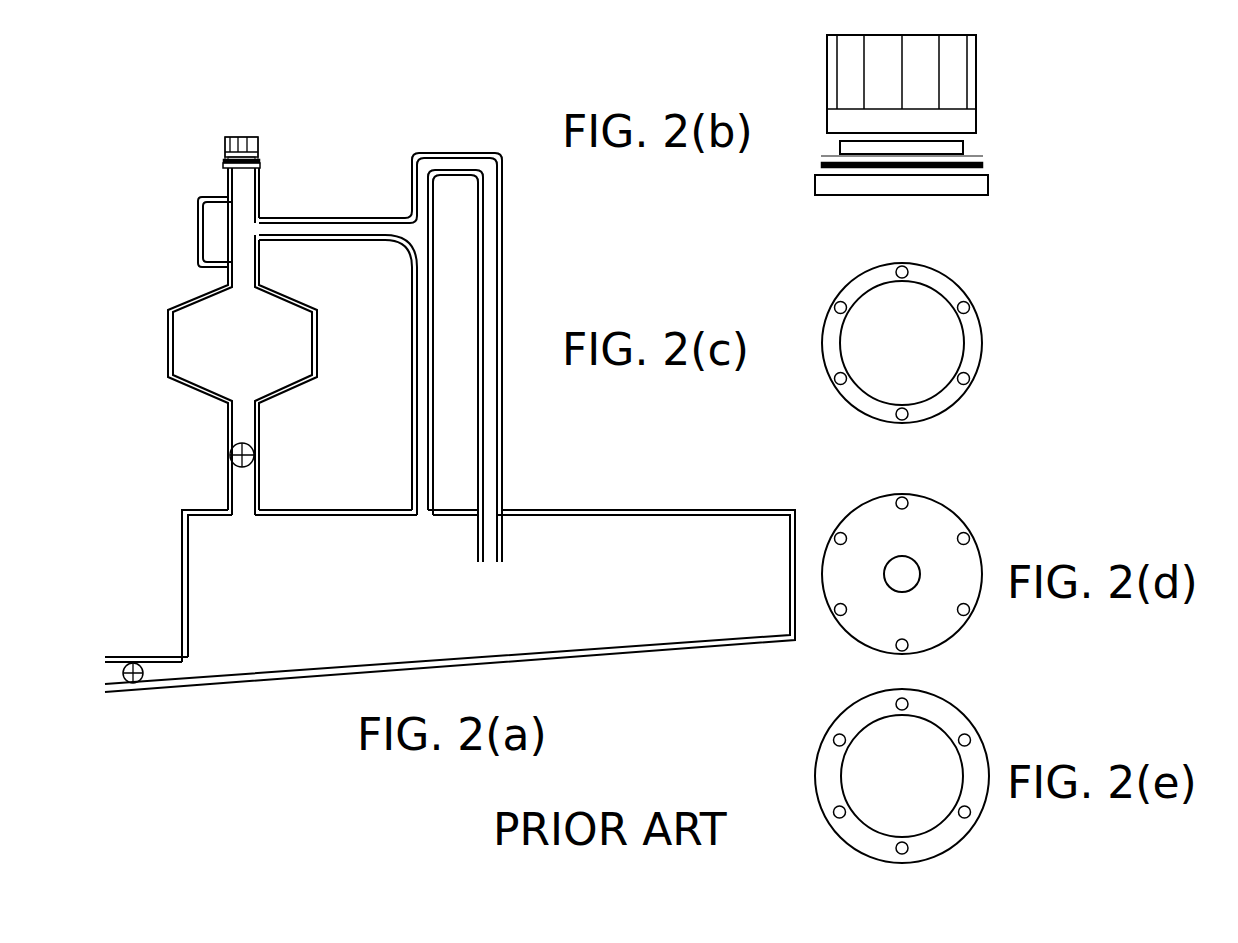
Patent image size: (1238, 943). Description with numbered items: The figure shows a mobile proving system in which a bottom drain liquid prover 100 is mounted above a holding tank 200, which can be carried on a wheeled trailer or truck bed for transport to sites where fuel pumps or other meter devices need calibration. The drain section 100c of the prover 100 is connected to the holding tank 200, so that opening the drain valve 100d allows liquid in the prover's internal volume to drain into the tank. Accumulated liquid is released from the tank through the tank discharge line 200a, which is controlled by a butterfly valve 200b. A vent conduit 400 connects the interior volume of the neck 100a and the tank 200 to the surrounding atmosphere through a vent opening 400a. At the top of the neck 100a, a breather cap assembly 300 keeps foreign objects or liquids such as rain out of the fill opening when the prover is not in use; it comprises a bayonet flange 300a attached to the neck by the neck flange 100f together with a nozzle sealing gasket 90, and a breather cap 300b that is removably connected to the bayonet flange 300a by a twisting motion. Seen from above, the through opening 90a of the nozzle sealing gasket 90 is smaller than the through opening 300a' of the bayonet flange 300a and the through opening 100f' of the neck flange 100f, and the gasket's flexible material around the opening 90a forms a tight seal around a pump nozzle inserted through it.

In FIG. 2A, the prover 100 is at (151, 445).
In FIG. 2A, the neck 100a is at (247, 250).
In FIG. 2A, the drain section 100c is at (247, 422).
In FIG. 2A, the drain valve 100d is at (240, 466).
In FIG. 2A, the neck flange 100f is at (205, 180).
In FIG. 2B, the neck flange 100f is at (939, 187).
In FIG. 2E, the neck flange 100f is at (937, 776).
In FIG. 2E, the through opening of neck flange 100f' is at (902, 776).
In FIG. 2A, the breather cap assembly 300 is at (292, 138).
In FIG. 2A, the bayonet flange 300a is at (289, 182).
In FIG. 2B, the bayonet flange 300a is at (966, 142).
In FIG. 2C, the bayonet flange 300a is at (965, 343).
In FIG. 2C, the through opening of bayonet flange 300a' is at (902, 343).
In FIG. 2A, the breather cap 300b is at (254, 148).
In FIG. 2B, the breather cap 300b is at (962, 70).
In FIG. 2B, the nozzle sealing gasket 90 is at (820, 162).
In FIG. 2D, the nozzle sealing gasket 90 is at (947, 525).
In FIG. 2A, the through opening of nozzle sealing gasket 90a is at (226, 160).
In FIG. 2D, the through opening of nozzle sealing gasket 90a is at (900, 573).
In FIG. 2A, the vent conduit 400 is at (465, 161).
In FIG. 2A, the vent opening 400a is at (486, 561).
In FIG. 2A, the holding tank 200 is at (428, 587).
In FIG. 2A, the tank discharge line 200a is at (167, 670).
In FIG. 2A, the butterfly valve 200b is at (120, 680).